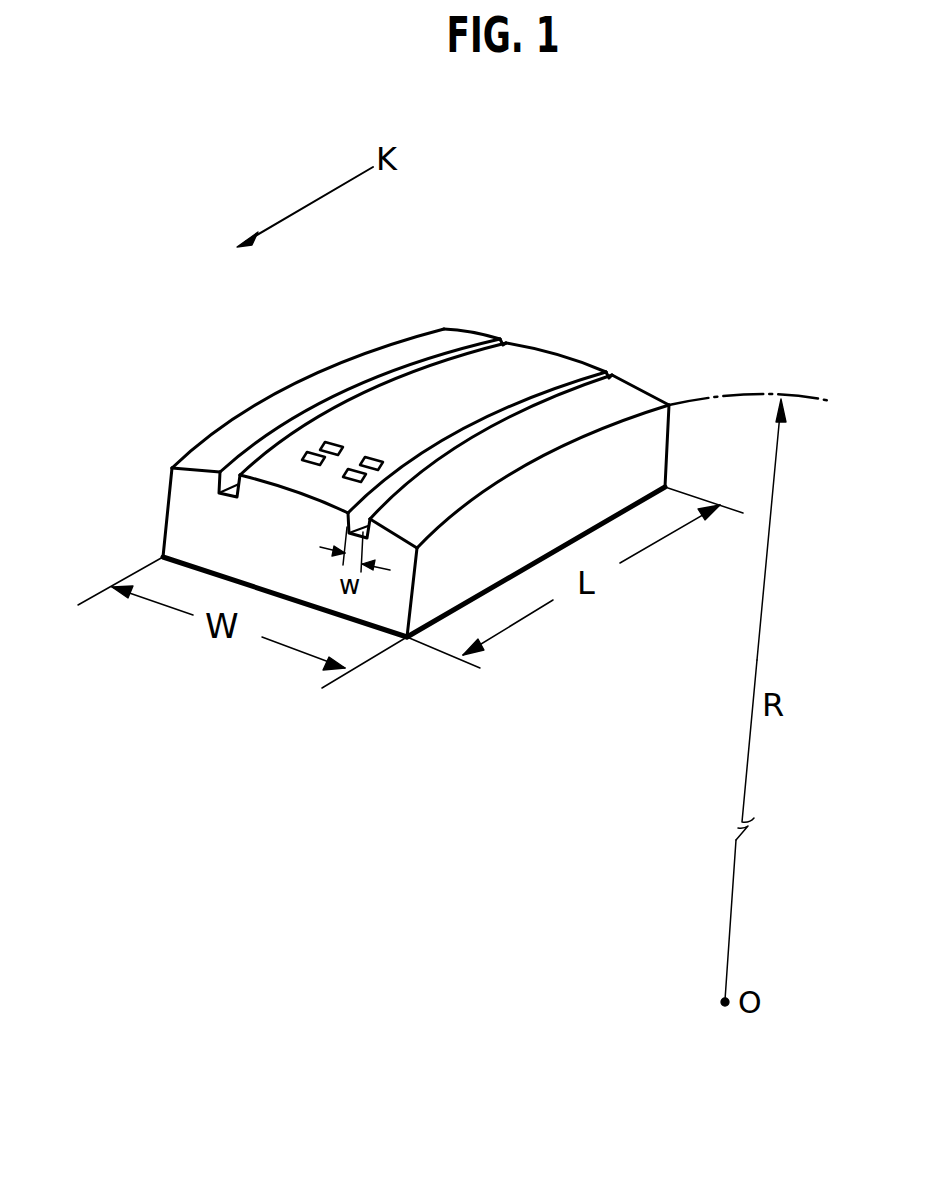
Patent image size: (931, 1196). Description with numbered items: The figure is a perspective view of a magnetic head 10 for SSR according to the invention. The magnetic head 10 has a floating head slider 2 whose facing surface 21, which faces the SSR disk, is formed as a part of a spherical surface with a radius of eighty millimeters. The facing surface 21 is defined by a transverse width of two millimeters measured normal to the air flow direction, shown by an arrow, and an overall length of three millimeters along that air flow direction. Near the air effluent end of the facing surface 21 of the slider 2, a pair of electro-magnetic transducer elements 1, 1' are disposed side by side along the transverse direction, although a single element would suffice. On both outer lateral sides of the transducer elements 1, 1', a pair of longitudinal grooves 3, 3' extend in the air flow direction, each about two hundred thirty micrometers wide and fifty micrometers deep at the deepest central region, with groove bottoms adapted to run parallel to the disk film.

The magnetic head 10 is at (183, 390).
The electro-magnetic transducer element 1 is at (305, 397).
The electro-magnetic transducer element 1' is at (359, 396).
The facing surface 21 is at (417, 340).
The longitudinal groove 3 is at (382, 384).
The longitudinal groove 3' is at (511, 431).
The floating head slider 2 is at (643, 467).